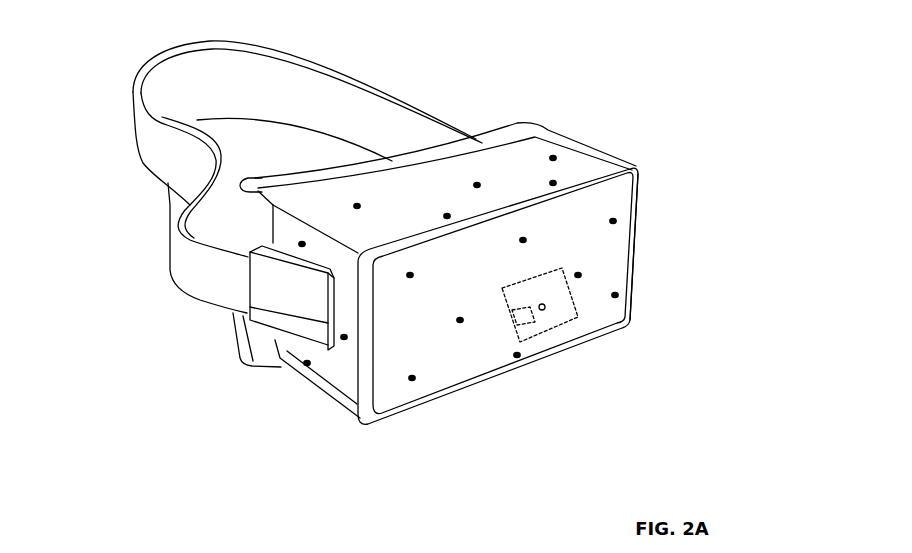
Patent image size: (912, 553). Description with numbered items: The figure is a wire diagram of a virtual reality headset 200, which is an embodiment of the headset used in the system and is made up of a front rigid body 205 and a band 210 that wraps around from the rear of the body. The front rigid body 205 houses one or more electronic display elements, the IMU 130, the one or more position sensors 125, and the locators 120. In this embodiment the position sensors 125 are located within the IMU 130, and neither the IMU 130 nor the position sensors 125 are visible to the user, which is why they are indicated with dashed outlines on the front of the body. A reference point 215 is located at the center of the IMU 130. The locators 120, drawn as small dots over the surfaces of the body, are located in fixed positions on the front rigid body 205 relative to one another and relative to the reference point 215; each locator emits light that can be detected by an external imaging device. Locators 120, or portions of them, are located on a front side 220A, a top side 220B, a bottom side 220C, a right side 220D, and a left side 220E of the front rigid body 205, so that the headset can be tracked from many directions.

The VR headset 200 is at (31, 43).
The band 210 is at (396, 94).
The front rigid body 205 is at (642, 170).
The front side 220A is at (400, 397).
The top side 220B is at (335, 207).
The bottom side 220C is at (302, 397).
The right side 220D is at (337, 364).
The left side 220E is at (616, 157).
The locators 120 is at (619, 292).
The IMU 130 is at (581, 319).
The position sensors 125 is at (517, 328).
The reference point 215 is at (543, 313).